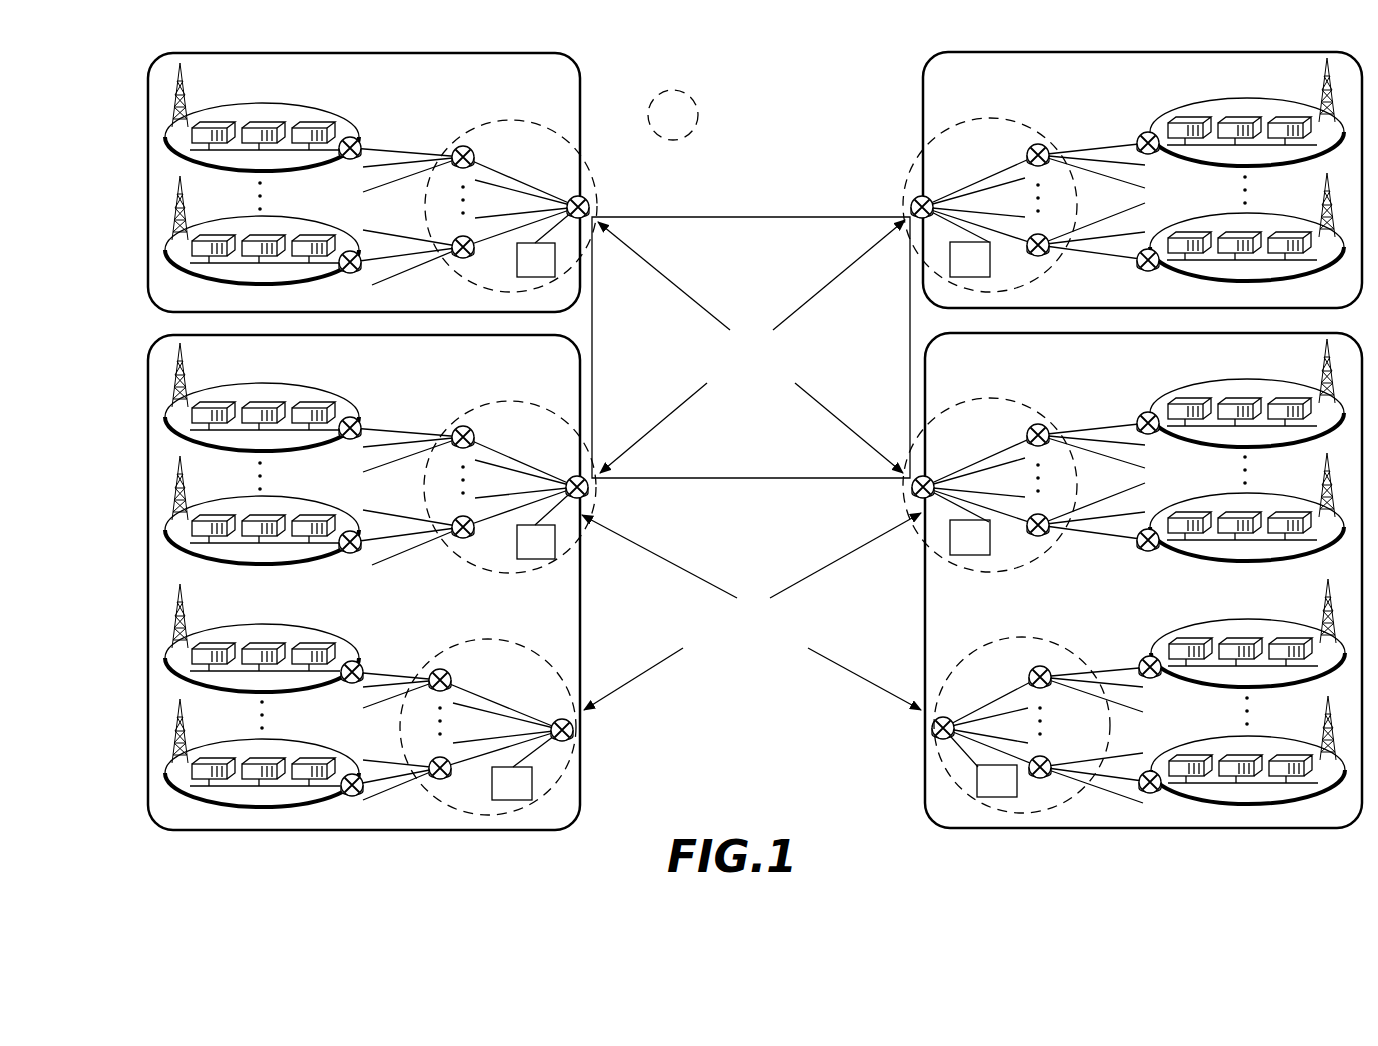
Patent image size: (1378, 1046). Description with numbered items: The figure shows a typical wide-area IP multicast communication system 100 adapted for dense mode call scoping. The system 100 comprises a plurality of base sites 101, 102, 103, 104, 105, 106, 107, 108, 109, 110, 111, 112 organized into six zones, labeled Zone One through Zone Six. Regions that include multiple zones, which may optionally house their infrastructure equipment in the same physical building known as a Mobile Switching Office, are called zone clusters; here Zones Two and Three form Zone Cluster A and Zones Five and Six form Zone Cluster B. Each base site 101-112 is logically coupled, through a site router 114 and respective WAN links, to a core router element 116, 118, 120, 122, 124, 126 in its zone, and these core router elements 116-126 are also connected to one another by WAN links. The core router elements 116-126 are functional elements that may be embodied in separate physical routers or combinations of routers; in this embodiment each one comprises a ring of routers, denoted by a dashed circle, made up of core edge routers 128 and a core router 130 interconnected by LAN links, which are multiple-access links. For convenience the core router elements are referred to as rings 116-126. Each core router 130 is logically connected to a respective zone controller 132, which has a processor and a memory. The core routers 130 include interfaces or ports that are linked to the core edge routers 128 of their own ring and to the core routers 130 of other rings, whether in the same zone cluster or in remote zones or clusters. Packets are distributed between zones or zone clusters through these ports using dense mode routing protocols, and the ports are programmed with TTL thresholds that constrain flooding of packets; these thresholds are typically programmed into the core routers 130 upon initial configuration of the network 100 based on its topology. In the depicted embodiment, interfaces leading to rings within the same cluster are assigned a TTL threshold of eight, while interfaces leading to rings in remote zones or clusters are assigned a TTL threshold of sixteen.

The IP multicast communication system 100 is at (762, 780).
The base site 101 is at (248, 100).
The base site 102 is at (248, 214).
The base site 103 is at (244, 382).
The base site 104 is at (244, 495).
The base site 105 is at (244, 623).
The base site 106 is at (244, 738).
The base site 107 is at (1268, 100).
The base site 108 is at (1268, 214).
The base site 109 is at (1268, 379).
The base site 110 is at (1268, 494).
The base site 111 is at (1268, 622).
The base site 112 is at (1268, 738).
The site router 114 is at (346, 164).
The core router element 116 is at (508, 118).
The core router element 118 is at (510, 399).
The core router element 120 is at (484, 638).
The core router element 122 is at (992, 118).
The core router element 124 is at (994, 397).
The core router element 126 is at (1022, 637).
The core edge router 128 is at (455, 146).
The core router 130 is at (574, 194).
The zone controller 132 is at (518, 259).